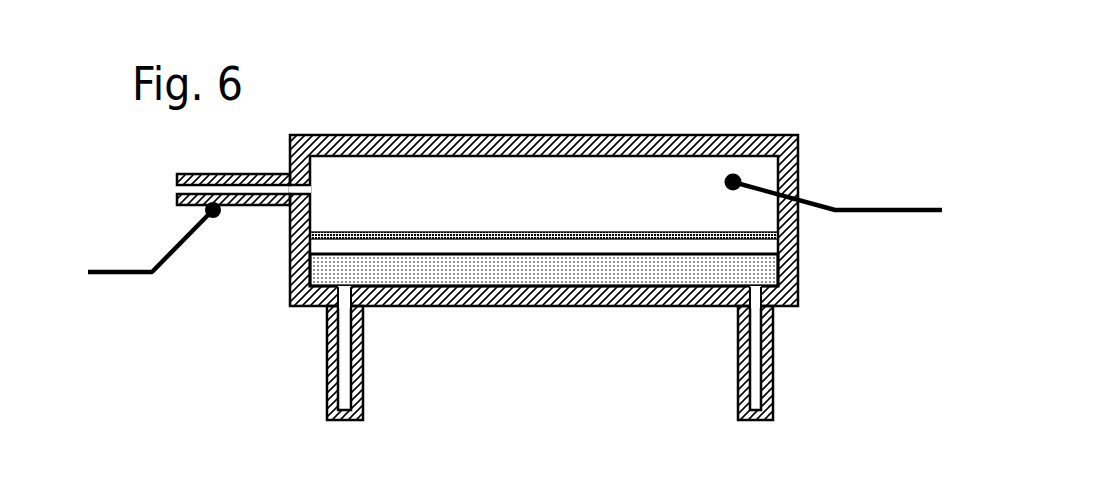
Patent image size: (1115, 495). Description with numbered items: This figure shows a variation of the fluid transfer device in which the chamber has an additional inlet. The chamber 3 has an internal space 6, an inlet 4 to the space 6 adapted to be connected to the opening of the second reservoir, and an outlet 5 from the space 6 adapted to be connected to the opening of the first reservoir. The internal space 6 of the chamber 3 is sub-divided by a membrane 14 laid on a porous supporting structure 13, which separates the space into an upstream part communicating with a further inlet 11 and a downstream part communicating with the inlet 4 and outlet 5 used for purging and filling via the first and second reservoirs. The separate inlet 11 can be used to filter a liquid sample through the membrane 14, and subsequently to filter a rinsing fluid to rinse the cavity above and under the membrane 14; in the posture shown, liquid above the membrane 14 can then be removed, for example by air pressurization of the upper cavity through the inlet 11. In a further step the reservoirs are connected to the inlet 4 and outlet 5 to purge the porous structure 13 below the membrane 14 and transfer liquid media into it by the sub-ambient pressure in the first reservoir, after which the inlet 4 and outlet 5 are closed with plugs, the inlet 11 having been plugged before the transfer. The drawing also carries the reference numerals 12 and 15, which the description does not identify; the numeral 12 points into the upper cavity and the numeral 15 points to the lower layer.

The chamber 3 is at (390, 132).
The inlet 4 is at (773, 364).
The outlet 5 is at (366, 389).
The internal space 6 is at (847, 199).
The further inlet 11 is at (169, 231).
The interior chamber 12 is at (580, 170).
The porous supporting structure 13 is at (741, 248).
The membrane 14 is at (643, 241).
The filter layer 15 is at (531, 276).